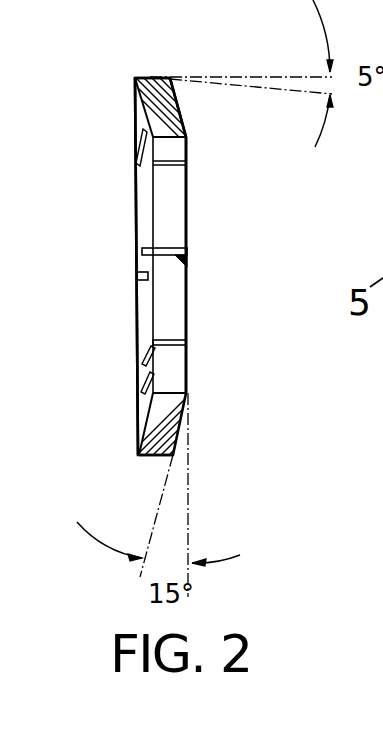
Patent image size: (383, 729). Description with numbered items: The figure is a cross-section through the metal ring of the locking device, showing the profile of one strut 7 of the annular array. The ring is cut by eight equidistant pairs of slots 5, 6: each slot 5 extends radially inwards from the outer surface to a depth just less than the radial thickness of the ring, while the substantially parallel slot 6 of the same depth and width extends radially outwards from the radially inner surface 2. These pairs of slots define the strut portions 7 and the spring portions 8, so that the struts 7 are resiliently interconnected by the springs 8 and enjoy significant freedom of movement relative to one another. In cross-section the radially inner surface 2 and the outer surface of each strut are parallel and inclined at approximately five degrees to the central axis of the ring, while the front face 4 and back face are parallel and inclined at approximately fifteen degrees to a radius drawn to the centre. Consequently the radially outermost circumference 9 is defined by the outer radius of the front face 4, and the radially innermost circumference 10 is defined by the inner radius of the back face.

The radially inner surface 2 is at (172, 148).
The front face 4 is at (142, 343).
The slot 5 is at (137, 273).
The slot 6 is at (187, 268).
The strut portion 7 is at (175, 95).
The spring portion 8 is at (137, 152).
The radially outermost circumference 9 is at (135, 78).
The radially innermost circumference 10 is at (186, 138).